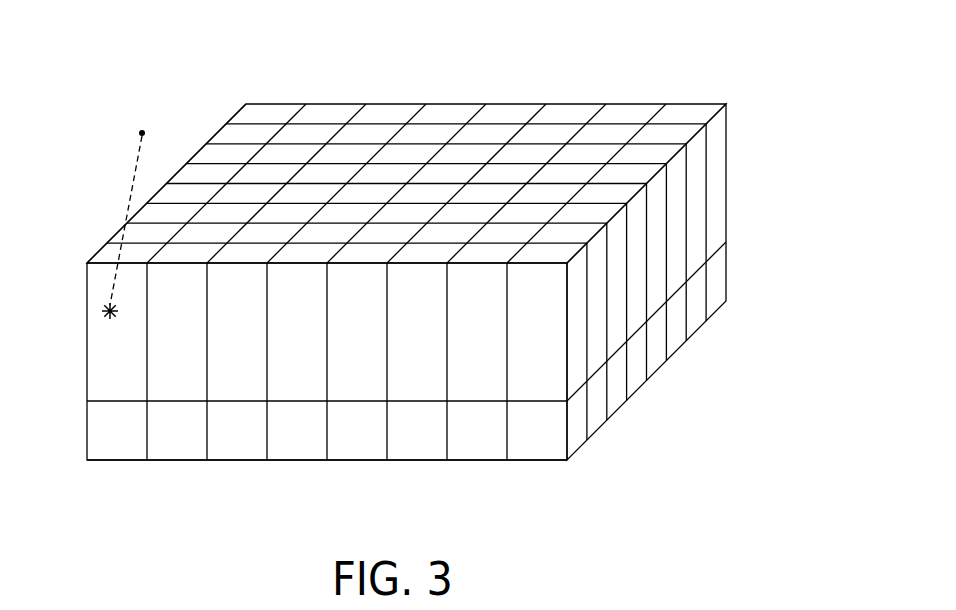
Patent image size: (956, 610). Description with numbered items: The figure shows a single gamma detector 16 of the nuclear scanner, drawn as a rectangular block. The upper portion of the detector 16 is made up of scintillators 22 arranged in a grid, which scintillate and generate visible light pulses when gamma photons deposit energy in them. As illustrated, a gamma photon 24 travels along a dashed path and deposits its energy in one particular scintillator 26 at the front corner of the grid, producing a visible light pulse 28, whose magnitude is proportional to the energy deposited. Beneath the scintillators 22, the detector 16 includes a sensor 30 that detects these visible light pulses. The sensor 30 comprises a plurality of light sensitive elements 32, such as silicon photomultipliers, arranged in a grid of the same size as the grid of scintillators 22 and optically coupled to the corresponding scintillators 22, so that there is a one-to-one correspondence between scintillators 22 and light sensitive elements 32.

The gamma detector 16 is at (400, 265).
The scintillators 22 is at (270, 113).
The gamma photon 24 is at (139, 133).
The scintillator 26 is at (101, 245).
The visible light pulse 28 is at (102, 311).
The sensor 30 is at (669, 428).
The light sensitive elements 32 is at (415, 445).